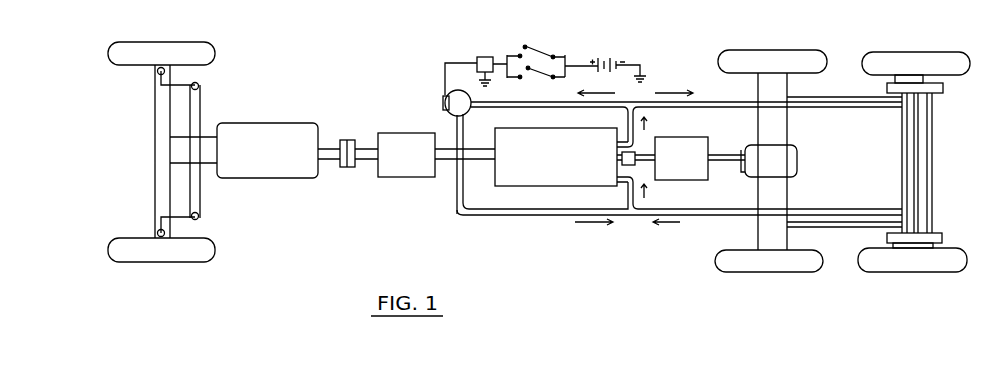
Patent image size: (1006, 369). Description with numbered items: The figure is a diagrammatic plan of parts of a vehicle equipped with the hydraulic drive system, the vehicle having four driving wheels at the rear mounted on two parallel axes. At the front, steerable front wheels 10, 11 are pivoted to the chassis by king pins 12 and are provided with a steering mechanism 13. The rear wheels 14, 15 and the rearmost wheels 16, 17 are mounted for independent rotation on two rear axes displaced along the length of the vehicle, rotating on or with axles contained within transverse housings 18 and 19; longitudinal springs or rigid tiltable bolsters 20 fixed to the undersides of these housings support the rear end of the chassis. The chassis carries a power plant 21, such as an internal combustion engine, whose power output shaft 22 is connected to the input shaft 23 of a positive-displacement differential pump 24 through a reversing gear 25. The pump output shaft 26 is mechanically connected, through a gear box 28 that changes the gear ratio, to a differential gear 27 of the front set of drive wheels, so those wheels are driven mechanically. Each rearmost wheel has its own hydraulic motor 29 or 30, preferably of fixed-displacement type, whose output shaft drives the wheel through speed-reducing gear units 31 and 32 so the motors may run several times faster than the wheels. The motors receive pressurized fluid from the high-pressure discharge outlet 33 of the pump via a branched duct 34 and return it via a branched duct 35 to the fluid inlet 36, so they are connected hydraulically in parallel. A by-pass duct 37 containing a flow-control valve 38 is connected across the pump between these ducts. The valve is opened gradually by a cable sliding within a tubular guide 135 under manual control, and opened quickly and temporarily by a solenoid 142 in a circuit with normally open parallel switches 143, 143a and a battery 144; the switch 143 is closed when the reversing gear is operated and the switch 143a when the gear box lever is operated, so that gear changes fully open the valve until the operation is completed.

The steerable front wheel 10 is at (170, 46).
The steerable front wheel 11 is at (172, 258).
The king pin 12 is at (158, 72).
The steering mechanism 13 is at (198, 110).
The rear wheel 14 is at (775, 50).
The rear wheel 15 is at (786, 272).
The rearmost wheel 16 is at (927, 57).
The rearmost wheel 17 is at (925, 267).
The transverse housing 18 is at (783, 128).
The transverse housing 19 is at (901, 166).
The longitudinal springs or bolsters 20 is at (822, 86).
The power plant 21 is at (270, 127).
The power output shaft 22 is at (327, 152).
The input shaft 23 is at (447, 157).
The differential pump 24 is at (535, 187).
The reversing gear 25 is at (407, 132).
The pump output shaft 26 is at (648, 140).
The differential gear 27 is at (797, 162).
The gear box 28 is at (693, 180).
The hydraulic motor 29 is at (935, 93).
The hydraulic motor 30 is at (937, 233).
The speed-reducing gear unit 31 is at (943, 80).
The speed-reducing gear unit 32 is at (940, 243).
The high-pressure discharge outlet 33 is at (620, 128).
The branched duct 34 is at (740, 102).
The branched duct 35 is at (647, 215).
The fluid inlet 36 is at (620, 187).
The by-pass duct 37 is at (468, 215).
The flow-control valve 38 is at (466, 112).
The tubular guide 135 is at (442, 104).
The solenoid 142 is at (483, 56).
The switch 143 is at (538, 52).
The switch 143a is at (530, 80).
The battery 144 is at (610, 57).